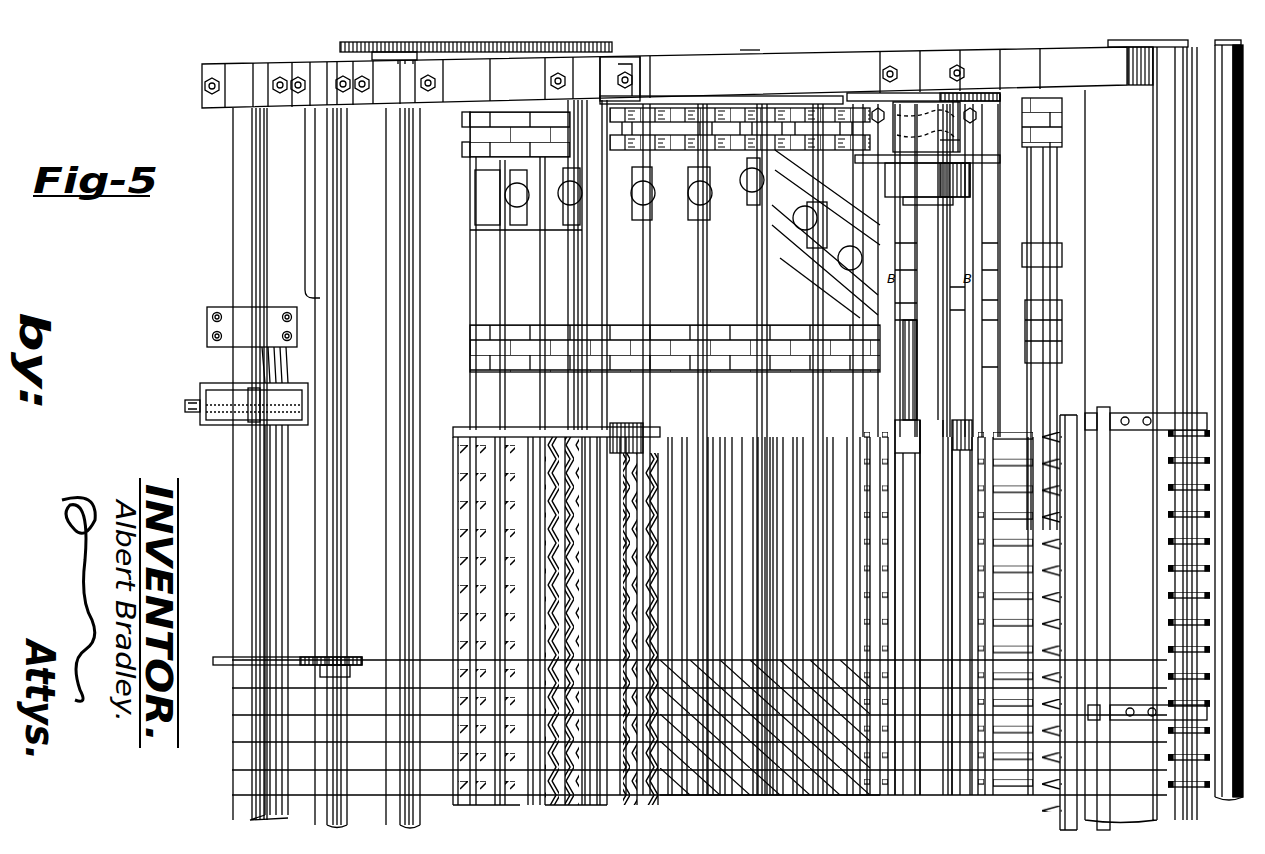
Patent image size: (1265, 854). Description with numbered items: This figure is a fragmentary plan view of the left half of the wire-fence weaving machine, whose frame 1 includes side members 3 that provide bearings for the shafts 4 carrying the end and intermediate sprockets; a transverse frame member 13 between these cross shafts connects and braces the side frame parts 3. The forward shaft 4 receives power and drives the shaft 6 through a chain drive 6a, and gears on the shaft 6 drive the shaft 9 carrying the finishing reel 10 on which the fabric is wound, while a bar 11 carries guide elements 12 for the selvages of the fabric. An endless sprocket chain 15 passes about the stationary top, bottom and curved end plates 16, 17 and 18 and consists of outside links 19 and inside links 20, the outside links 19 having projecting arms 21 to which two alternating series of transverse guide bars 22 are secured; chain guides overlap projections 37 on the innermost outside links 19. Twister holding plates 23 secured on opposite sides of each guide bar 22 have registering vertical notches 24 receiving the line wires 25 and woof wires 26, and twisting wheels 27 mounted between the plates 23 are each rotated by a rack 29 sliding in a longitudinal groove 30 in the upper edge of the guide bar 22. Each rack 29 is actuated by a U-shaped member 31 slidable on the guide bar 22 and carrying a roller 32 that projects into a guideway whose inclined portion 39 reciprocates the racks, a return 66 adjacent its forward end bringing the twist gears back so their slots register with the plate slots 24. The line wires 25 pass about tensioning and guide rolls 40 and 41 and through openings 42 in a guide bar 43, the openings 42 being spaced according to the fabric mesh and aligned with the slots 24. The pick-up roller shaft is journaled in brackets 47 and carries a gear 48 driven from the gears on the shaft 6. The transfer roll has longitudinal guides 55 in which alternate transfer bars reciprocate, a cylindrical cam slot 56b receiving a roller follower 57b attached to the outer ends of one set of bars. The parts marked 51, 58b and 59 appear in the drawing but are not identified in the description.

The frame 1 is at (757, 52).
The side members 3 is at (811, 64).
The shafts 4 is at (631, 62).
The shaft 6 is at (396, 438).
The chain drive 6a is at (488, 38).
The shaft 9 is at (240, 207).
The finishing reel 10 is at (248, 474).
The bar 11 is at (340, 598).
The guide elements 12 is at (353, 655).
The transverse frame member 13 is at (510, 258).
The endless chain 15 is at (707, 107).
The top plate 16 is at (662, 449).
The bottom plate 17 is at (1121, 435).
The curved end plate 18 is at (1033, 203).
The outside links 19 is at (777, 140).
The inside links 20 is at (727, 133).
The projecting arms 21 is at (681, 112).
The guide bars 22 is at (457, 495).
The twister holding plates 23 is at (684, 428).
The vertical notches 24 is at (725, 425).
The line wires 25 is at (632, 422).
The woof wires 26 is at (842, 790).
The twisting wheels 27 is at (767, 800).
The rack 29 is at (663, 420).
The longitudinal groove 30 is at (693, 325).
The U-shaped member 31 is at (790, 203).
The roller 32 is at (717, 190).
The projections 37 is at (821, 282).
The inclined portion 39 is at (790, 222).
The tensioning and guide rolls 40 is at (1216, 62).
The tensioning and guide rolls 41 is at (1175, 117).
The openings 42 is at (1115, 627).
The guide bar 43 is at (1103, 408).
The brackets 47 is at (626, 64).
The gear 48 is at (593, 262).
The block 51 is at (922, 205).
The longitudinal guides 55 is at (827, 197).
The circumferential slot 56b is at (925, 105).
The roller 57b is at (922, 110).
The block 58b is at (915, 100).
The column 59 is at (997, 158).
The return 66 is at (685, 207).